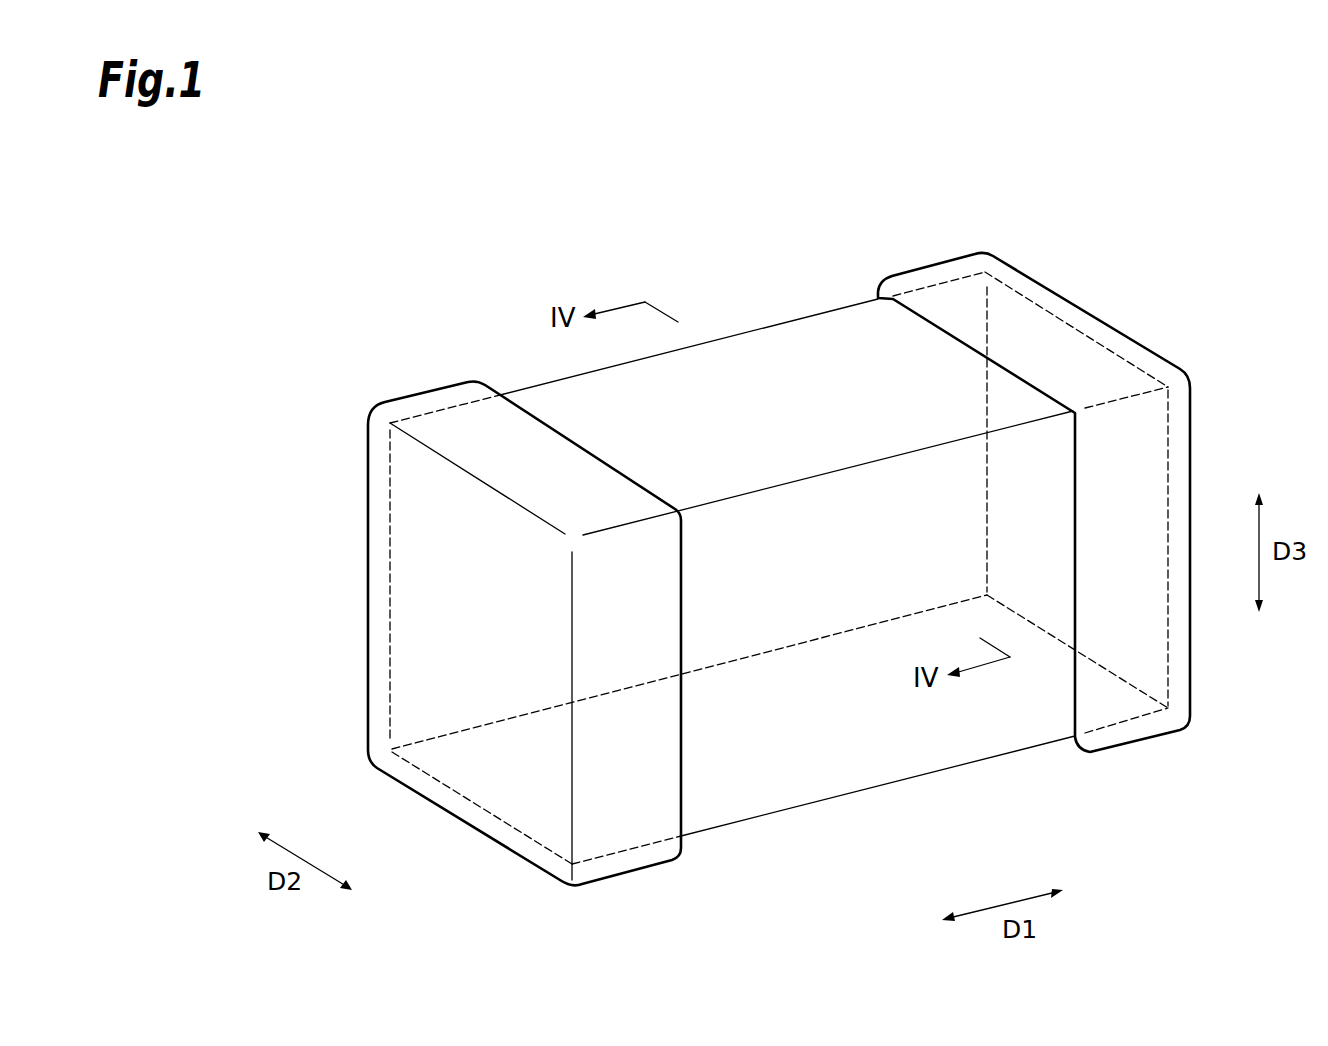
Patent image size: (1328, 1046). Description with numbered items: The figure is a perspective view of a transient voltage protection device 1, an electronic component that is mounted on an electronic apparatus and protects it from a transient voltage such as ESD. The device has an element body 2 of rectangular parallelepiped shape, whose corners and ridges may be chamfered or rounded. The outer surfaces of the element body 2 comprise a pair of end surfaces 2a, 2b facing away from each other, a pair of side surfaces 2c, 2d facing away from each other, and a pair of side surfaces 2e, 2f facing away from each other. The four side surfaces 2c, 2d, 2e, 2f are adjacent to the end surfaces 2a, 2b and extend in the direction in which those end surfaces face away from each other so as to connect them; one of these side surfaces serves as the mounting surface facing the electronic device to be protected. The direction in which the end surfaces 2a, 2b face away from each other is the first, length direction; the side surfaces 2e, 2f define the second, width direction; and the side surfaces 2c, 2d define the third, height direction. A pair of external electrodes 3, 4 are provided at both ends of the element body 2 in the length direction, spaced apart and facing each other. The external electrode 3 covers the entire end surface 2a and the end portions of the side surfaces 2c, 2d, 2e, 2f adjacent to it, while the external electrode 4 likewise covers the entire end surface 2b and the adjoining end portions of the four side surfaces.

The transient voltage protection device 1 is at (1108, 185).
The element body 2 is at (832, 288).
The end surface 2a is at (1097, 367).
The end surface 2b is at (495, 792).
The side surface 2c is at (793, 783).
The side surface 2d is at (780, 340).
The side surface 2e is at (955, 732).
The side surface 2f is at (727, 368).
The external electrode 3 is at (965, 275).
The external electrode 4 is at (427, 403).